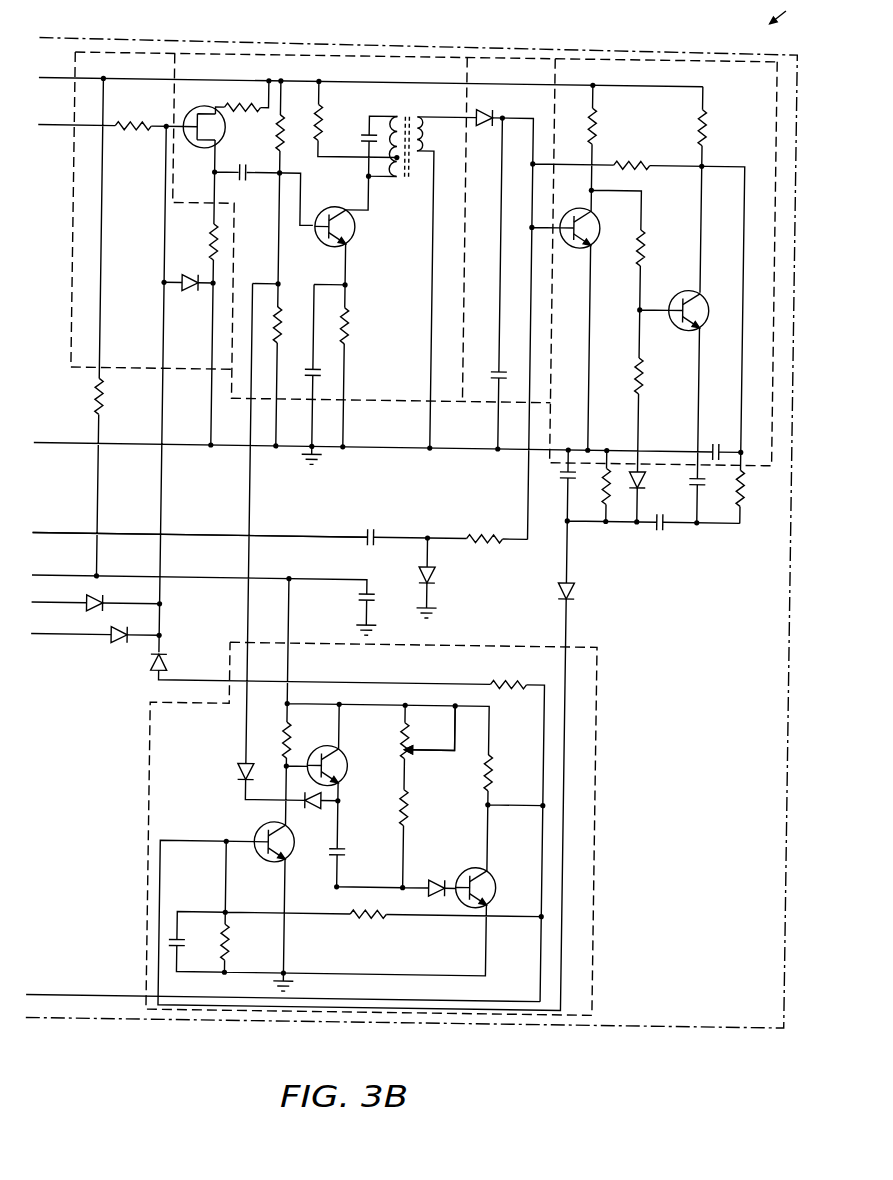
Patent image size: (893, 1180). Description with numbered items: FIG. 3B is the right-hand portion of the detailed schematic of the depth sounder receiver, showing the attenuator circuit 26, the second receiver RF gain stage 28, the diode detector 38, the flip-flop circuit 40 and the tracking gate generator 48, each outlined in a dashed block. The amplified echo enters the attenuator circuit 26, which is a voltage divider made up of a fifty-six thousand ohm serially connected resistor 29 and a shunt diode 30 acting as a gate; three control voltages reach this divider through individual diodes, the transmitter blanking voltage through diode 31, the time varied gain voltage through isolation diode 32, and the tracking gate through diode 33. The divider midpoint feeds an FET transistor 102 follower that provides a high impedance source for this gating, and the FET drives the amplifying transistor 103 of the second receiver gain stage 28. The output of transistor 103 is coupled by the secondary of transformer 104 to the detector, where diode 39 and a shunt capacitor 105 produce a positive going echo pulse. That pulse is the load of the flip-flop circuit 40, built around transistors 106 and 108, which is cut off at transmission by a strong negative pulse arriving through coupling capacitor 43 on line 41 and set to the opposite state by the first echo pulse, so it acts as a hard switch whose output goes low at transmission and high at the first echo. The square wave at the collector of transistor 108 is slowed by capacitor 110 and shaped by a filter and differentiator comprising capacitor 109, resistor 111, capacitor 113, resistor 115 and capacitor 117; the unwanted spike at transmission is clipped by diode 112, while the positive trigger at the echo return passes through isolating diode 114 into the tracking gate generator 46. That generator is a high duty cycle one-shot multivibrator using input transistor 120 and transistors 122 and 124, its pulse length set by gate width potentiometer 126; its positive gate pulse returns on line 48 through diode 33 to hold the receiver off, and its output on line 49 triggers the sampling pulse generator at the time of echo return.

The attenuator circuit 26 is at (68, 162).
The second receiver RF gain stage 28 is at (326, 45).
The resistor 29 is at (138, 118).
The diode 30 is at (199, 285).
The diode 31 is at (98, 616).
The isolation diode 32 is at (134, 650).
The diode 33 is at (177, 656).
The diode detector 38 is at (481, 48).
The detector diode 39 is at (488, 103).
The flip-flop circuit 40 is at (661, 51).
The line 41 is at (322, 530).
The coupling capacitor 43 is at (386, 524).
The tracking gate generator 46 is at (425, 638).
The line 48 is at (212, 664).
The line 49 is at (84, 992).
The FET transistor 102 is at (236, 100).
The transistor 103 is at (359, 223).
The transformer 104 is at (407, 114).
The shunt capacitor 105 is at (495, 368).
The transistor 106 is at (603, 214).
The transistor 108 is at (684, 282).
The capacitor 109 is at (709, 475).
The capacitor 110 is at (724, 435).
The resistor 111 is at (750, 484).
The diode 112 is at (656, 459).
The capacitor 113 is at (668, 521).
The isolating diode 114 is at (586, 584).
The resistor 115 is at (610, 496).
The capacitor 117 is at (206, 938).
The input transistor 120 is at (297, 858).
The transistor 122 is at (350, 750).
The transistor 124 is at (502, 863).
The gate width potentiometer 126 is at (428, 744).